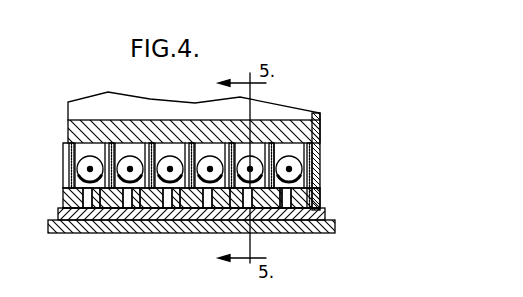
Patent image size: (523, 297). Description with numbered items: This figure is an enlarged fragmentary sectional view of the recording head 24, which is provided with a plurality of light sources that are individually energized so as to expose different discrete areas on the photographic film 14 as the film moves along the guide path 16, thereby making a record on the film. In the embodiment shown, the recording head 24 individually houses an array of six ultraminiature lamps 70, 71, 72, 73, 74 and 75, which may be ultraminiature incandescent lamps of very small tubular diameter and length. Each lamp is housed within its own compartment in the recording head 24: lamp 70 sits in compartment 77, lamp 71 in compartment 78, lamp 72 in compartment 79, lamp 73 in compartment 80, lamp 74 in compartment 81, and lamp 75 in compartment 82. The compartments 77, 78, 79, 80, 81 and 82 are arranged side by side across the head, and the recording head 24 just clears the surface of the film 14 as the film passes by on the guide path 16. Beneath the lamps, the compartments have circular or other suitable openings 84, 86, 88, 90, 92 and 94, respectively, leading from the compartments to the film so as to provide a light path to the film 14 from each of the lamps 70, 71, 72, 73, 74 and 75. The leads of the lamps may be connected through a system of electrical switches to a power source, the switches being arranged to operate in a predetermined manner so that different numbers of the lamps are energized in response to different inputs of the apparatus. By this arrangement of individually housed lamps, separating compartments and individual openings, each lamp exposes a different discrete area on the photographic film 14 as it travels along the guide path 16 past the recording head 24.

The photographic film 14 is at (332, 209).
The guide path 16 is at (84, 233).
The recording head 24 is at (307, 123).
The lamp 70 is at (91, 156).
The lamp 71 is at (129, 156).
The lamp 72 is at (174, 156).
The lamp 73 is at (211, 156).
The lamp 74 is at (250, 156).
The lamp 75 is at (305, 172).
The compartment 77 is at (68, 157).
The compartment 78 is at (116, 144).
The compartment 79 is at (163, 144).
The compartment 80 is at (199, 147).
The compartment 81 is at (264, 148).
The compartment 82 is at (318, 143).
The opening 84 is at (84, 200).
The opening 86 is at (125, 233).
The opening 88 is at (165, 233).
The opening 90 is at (210, 233).
The opening 92 is at (262, 233).
The opening 94 is at (296, 233).